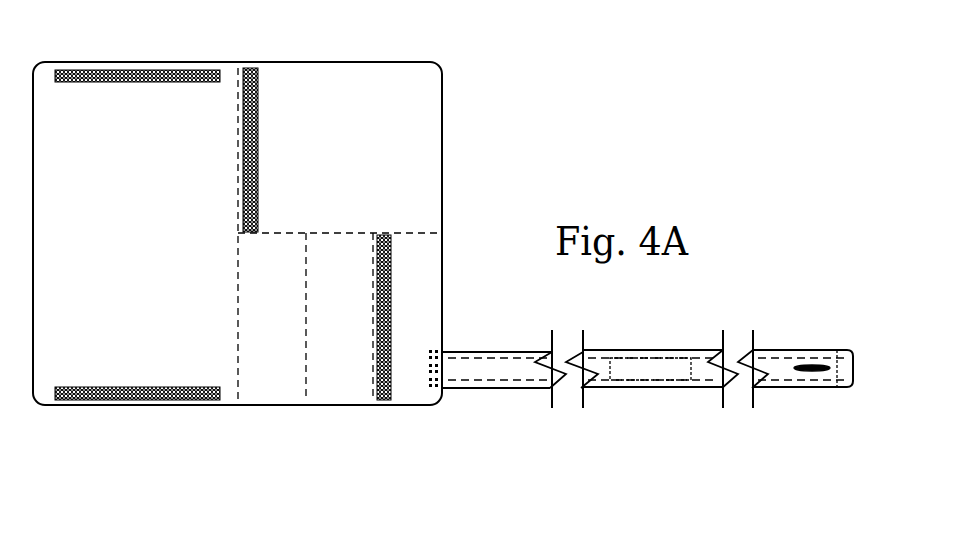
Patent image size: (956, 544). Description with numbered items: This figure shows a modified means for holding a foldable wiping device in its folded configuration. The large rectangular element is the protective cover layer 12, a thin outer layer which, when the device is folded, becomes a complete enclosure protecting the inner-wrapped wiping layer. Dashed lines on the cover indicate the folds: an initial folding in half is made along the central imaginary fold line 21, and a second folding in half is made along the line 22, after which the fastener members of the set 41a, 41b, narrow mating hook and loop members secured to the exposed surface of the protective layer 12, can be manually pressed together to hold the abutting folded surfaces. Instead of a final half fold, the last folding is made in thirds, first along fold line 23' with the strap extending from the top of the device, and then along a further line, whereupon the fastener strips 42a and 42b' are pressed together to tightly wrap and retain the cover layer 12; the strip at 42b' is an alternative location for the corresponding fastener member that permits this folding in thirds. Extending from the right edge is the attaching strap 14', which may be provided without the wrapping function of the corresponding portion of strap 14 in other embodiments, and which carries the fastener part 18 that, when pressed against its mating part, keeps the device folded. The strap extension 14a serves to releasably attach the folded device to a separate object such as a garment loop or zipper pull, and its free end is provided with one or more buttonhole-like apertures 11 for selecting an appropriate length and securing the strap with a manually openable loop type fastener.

The protective cover layer 12 is at (322, 70).
The fastener member 41a is at (148, 396).
The fastener member 41b is at (118, 80).
The fastener strip 42a is at (251, 74).
The alternative fastener member location 42b' is at (409, 317).
The central imaginary fold line 21 is at (224, 280).
The fold line 22 is at (328, 232).
The fold line 23' is at (372, 335).
The attaching strap 14' is at (504, 362).
The strap 14 is at (652, 358).
The fastener part 18 is at (657, 372).
The strap extension 14a is at (790, 352).
The apertures 11 is at (818, 369).